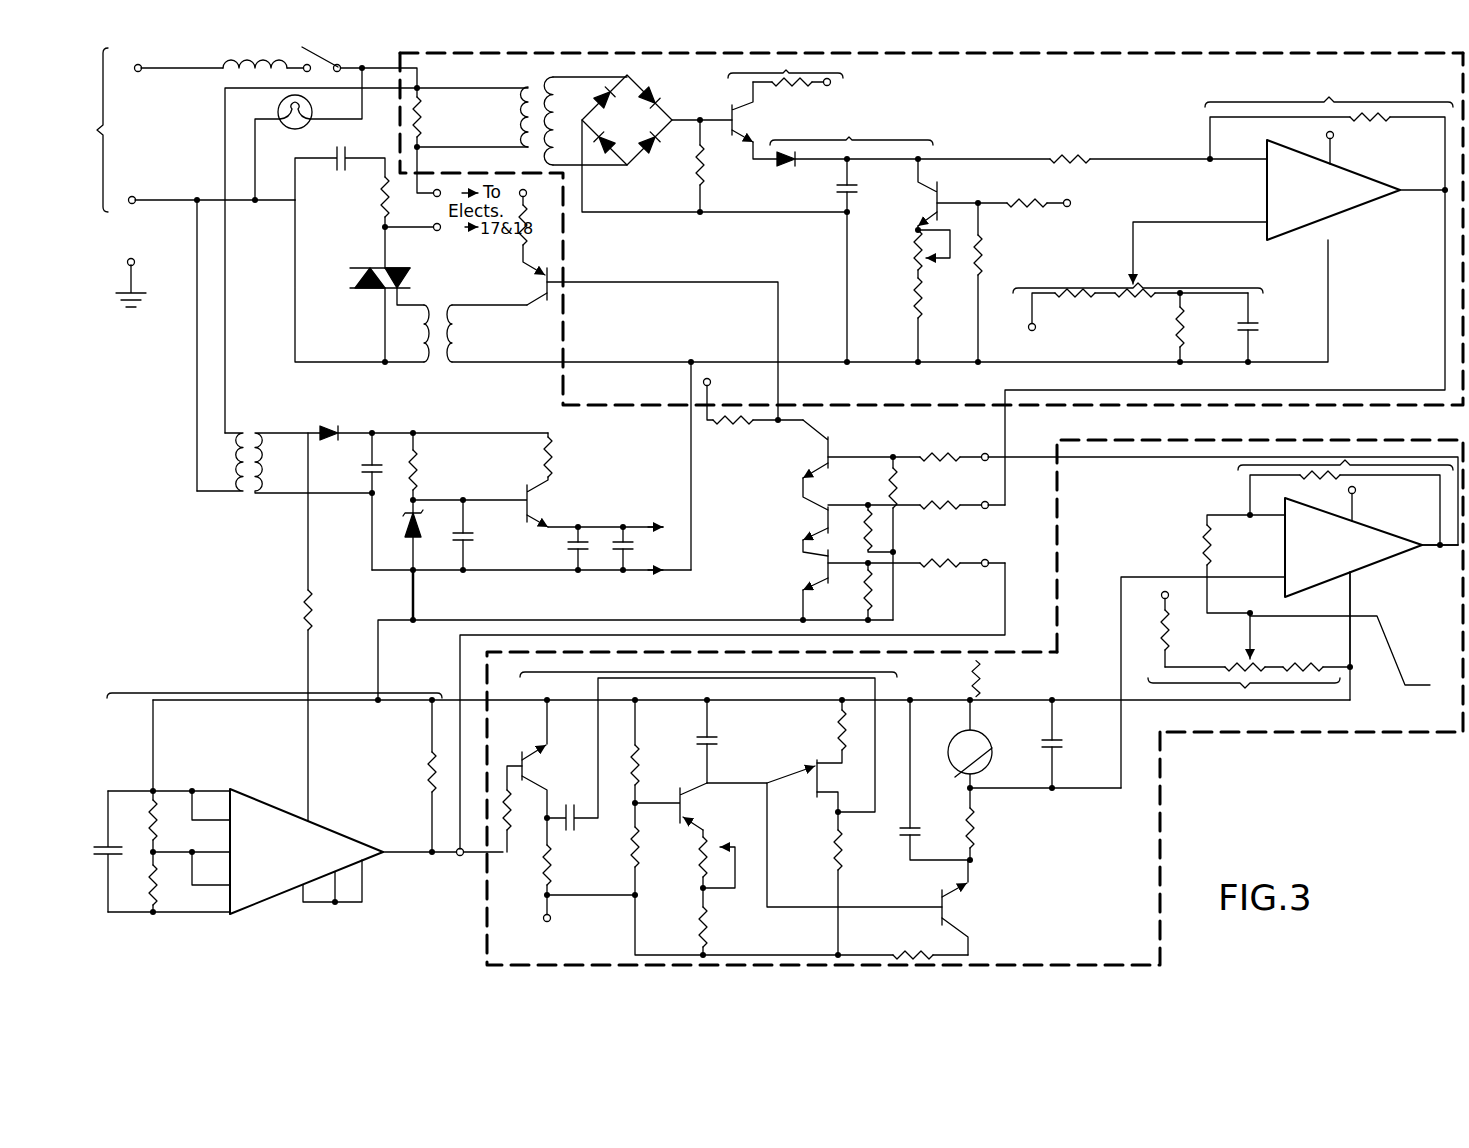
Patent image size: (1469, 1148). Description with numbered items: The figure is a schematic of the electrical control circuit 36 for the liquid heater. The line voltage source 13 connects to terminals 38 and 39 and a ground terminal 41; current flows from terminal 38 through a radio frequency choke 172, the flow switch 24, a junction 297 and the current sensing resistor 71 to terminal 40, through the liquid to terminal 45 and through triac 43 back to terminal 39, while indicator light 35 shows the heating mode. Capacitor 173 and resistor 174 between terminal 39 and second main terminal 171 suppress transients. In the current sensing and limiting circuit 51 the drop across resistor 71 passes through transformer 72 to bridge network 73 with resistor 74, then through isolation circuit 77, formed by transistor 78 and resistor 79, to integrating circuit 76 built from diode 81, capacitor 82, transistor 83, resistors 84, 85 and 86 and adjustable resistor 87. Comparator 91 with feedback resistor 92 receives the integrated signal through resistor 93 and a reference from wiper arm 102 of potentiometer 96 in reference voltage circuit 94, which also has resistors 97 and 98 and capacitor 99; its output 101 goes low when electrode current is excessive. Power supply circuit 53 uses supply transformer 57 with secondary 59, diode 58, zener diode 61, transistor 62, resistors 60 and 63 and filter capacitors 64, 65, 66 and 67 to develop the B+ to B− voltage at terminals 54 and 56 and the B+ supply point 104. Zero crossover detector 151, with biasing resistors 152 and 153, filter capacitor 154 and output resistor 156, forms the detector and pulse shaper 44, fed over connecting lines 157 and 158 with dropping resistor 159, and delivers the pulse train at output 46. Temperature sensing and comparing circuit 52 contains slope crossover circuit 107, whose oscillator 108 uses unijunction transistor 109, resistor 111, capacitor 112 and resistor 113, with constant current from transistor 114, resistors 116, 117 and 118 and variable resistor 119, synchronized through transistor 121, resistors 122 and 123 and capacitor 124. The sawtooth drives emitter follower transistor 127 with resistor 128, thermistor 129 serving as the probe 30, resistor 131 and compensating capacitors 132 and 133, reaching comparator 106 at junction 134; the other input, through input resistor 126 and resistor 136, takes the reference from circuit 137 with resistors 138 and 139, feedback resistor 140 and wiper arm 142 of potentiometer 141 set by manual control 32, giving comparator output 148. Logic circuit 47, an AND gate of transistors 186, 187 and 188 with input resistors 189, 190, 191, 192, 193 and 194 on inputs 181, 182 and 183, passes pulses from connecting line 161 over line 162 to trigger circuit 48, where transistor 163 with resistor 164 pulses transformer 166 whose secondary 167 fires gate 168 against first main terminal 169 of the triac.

The source of line voltage 13 is at (92, 128).
The terminal 38 is at (140, 64).
The terminal 39 is at (132, 198).
The ground terminal 41 is at (131, 258).
The radio frequency choke 172 is at (266, 60).
The flow switch 24 is at (328, 49).
The indicator light 35 is at (287, 125).
The junction 297 is at (420, 87).
The current sensing resistor 71 is at (423, 129).
The transformer 72 is at (527, 87).
The full wave diode rectifying bridge network 73 is at (655, 78).
The resistor 74 is at (705, 171).
The transistor 78 is at (728, 110).
The resistor 79 is at (792, 85).
The isolation circuit 77 is at (787, 68).
The integrating circuit 76 is at (850, 135).
The diode 81 is at (791, 168).
The capacitor 82 is at (890, 181).
The transistor 83 is at (939, 188).
The resistor 84 is at (925, 307).
The resistor 85 is at (983, 257).
The resistor 86 is at (1033, 178).
The adjustable resistor 87 is at (912, 248).
The resistor 93 is at (1073, 153).
The comparator 91 is at (1328, 98).
The feedback resistor 92 is at (1384, 117).
The output 101 is at (1443, 187).
The wiper arm 102 is at (1131, 256).
The adjustable reference voltage circuit 94 is at (1147, 284).
The resistor 97 is at (1065, 301).
The potentiometer 96 is at (1147, 298).
The resistor 98 is at (1187, 329).
The capacitor 99 is at (1258, 330).
The electrical control circuit 36 is at (905, 48).
The current sensing and limiting circuit 51 is at (1028, 55).
The terminal 40 is at (438, 200).
The terminal 45 is at (438, 233).
The capacitor 173 is at (343, 165).
The resistor 174 is at (385, 198).
The second main terminal 171 is at (383, 250).
The triac 43 is at (352, 283).
The gate 168 is at (399, 306).
The first main terminal 169 is at (383, 317).
The secondary 167 is at (427, 327).
The trigger circuit 48 is at (487, 313).
The transformer 166 is at (440, 365).
The transistor 163 is at (551, 297).
The resistor 164 is at (527, 226).
The connecting line 162 is at (693, 282).
The B+ supply 104 is at (725, 382).
The power supply circuit 53 is at (578, 443).
The supply transformer 57 is at (244, 431).
The secondary 59 is at (262, 488).
The diode 58 is at (337, 426).
The capacitor 64 is at (362, 472).
The resistor 60 is at (418, 468).
The zener diode 61 is at (408, 538).
The capacitor 65 is at (470, 534).
The transistor 62 is at (525, 487).
The collector resistor 63 is at (553, 458).
The terminal 54 is at (623, 525).
The terminal 56 is at (625, 570).
The capacitor 66 is at (572, 542).
The capacitor 67 is at (630, 542).
The dropping resistor 159 is at (302, 604).
The connecting line 158 is at (338, 666).
The zero crossover detector and pulse shaper 44 is at (228, 690).
The connecting line 157 is at (155, 737).
The zero crossover detector 151 is at (255, 789).
The biasing resistor 152 is at (157, 827).
The biasing resistor 153 is at (158, 878).
The filter capacitor 154 is at (94, 857).
The output resistor 156 is at (428, 758).
The output 46 is at (403, 854).
The logic circuit 47 is at (843, 452).
The transistor 186 is at (823, 447).
The transistor 187 is at (825, 518).
The transistor 188 is at (825, 560).
The input resistor 189 is at (953, 463).
The input resistor 190 is at (890, 480).
The input resistor 191 is at (950, 518).
The input resistor 192 is at (864, 530).
The input resistor 193 is at (950, 575).
The input resistor 194 is at (863, 590).
The input 181 is at (990, 440).
The input 182 is at (990, 510).
The input 183 is at (988, 560).
The connecting line 161 is at (950, 633).
The temperature sensing and comparing circuit 52 is at (1052, 450).
The ramp or slope crossover circuit 107 is at (1165, 778).
The comparator 106 is at (1346, 462).
The feedback resistor 140 is at (1302, 477).
The comparator output 148 is at (1440, 548).
The resistor 136 is at (1200, 543).
The junction 134 is at (1250, 577).
The potentiometer 141 is at (1252, 662).
The wiper arm 142 is at (1246, 645).
The resistor 139 is at (1303, 662).
The resistor 138 is at (1173, 632).
The reference circuit 137 is at (1246, 688).
The manual control 32 is at (1355, 656).
The oscillator 108 is at (707, 666).
The transistor 121 is at (522, 752).
The resistor 122 is at (512, 822).
The resistor 123 is at (540, 865).
The capacitor 124 is at (571, 805).
The resistor 116 is at (638, 750).
The resistor 117 is at (638, 845).
The transistor 114 is at (680, 790).
The variable resistor 119 is at (700, 875).
The resistor 118 is at (708, 922).
The capacitor 112 is at (720, 740).
The input resistor 126 is at (768, 778).
The resistor 111 is at (837, 729).
The unijunction transistor 109 is at (815, 796).
The resistor 113 is at (832, 837).
The resistor 128 is at (898, 955).
The transistor 127 is at (950, 906).
The resistor 131 is at (981, 828).
The compensating capacitor 132 is at (920, 829).
The heat conductive probe 30 is at (958, 737).
The thermistor 129 is at (992, 748).
The compensating capacitor 133 is at (1085, 745).